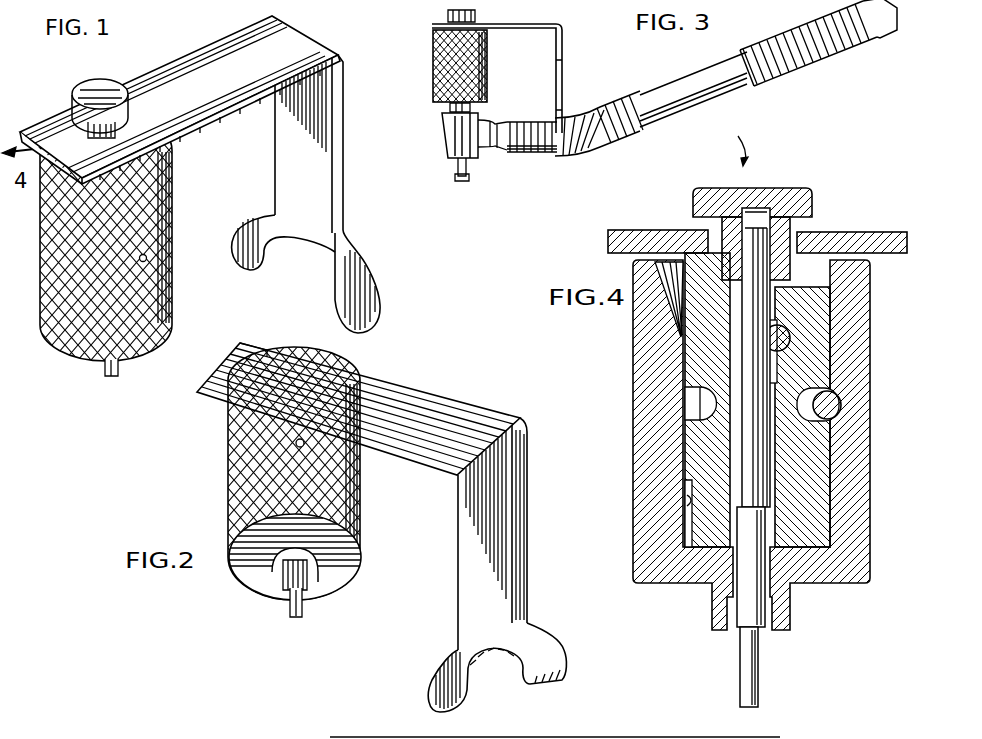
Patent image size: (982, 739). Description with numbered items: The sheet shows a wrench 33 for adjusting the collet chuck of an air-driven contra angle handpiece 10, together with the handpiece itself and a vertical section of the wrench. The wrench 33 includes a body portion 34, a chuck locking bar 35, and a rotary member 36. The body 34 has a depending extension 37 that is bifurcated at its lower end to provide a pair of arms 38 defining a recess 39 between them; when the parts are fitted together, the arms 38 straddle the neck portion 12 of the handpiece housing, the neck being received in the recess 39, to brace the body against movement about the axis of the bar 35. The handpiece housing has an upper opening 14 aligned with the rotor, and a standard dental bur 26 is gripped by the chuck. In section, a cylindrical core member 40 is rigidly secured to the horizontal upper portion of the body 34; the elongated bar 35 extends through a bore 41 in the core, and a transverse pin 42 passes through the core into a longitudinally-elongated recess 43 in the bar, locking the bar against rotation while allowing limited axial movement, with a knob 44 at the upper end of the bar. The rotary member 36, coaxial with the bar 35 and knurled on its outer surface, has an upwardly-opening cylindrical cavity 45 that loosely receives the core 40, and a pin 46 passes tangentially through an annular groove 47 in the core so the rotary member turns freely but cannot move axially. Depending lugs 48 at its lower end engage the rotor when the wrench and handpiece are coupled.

In FIG. 3, the handpiece 10 is at (717, 104).
In FIG. 3, the neck portion 12 is at (535, 118).
In FIG. 4, the upper opening 14 is at (640, 737).
In FIG. 3, the dental bur 26 is at (470, 166).
In FIG. 1, the wrench 33 is at (229, 174).
In FIG. 3, the wrench 33 is at (495, 66).
In FIG. 2, the wrench 33 is at (404, 527).
In FIG. 1, the body portion 34 is at (225, 90).
In FIG. 4, the body portion 34 is at (648, 232).
In FIG. 2, the body portion 34 is at (358, 409).
In FIG. 1, the chuck locking bar 35 is at (120, 368).
In FIG. 4, the chuck locking bar 35 is at (758, 668).
In FIG. 2, the chuck locking bar 35 is at (290, 612).
In FIG. 1, the rotary member 36 is at (172, 298).
In FIG. 3, the rotary member 36 is at (460, 66).
In FIG. 4, the rotary member 36 is at (632, 398).
In FIG. 2, the rotary member 36 is at (362, 492).
In FIG. 1, the depending extension 37 is at (318, 170).
In FIG. 3, the depending extension 37 is at (563, 62).
In FIG. 2, the depending extension 37 is at (510, 573).
In FIG. 1, the arms 38 is at (250, 230).
In FIG. 2, the arms 38 is at (548, 660).
In FIG. 1, the recess 39 is at (307, 243).
In FIG. 2, the recess 39 is at (468, 672).
In FIG. 4, the cylindrical core member 40 is at (813, 345).
In FIG. 4, the bore 41 is at (745, 440).
In FIG. 4, the transverse pin 42 is at (790, 333).
In FIG. 4, the longitudinally-elongated recess 43 is at (757, 370).
In FIG. 1, the knob 44 is at (95, 88).
In FIG. 3, the knob 44 is at (477, 13).
In FIG. 4, the knob 44 is at (815, 200).
In FIG. 4, the cylindrical cavity 45 is at (687, 500).
In FIG. 1, the pin 46 is at (150, 259).
In FIG. 4, the pin 46 is at (843, 408).
In FIG. 4, the annular groove 47 is at (642, 414).
In FIG. 4, the depending lugs 48 is at (790, 615).
In FIG. 2, the depending lugs 48 is at (270, 566).